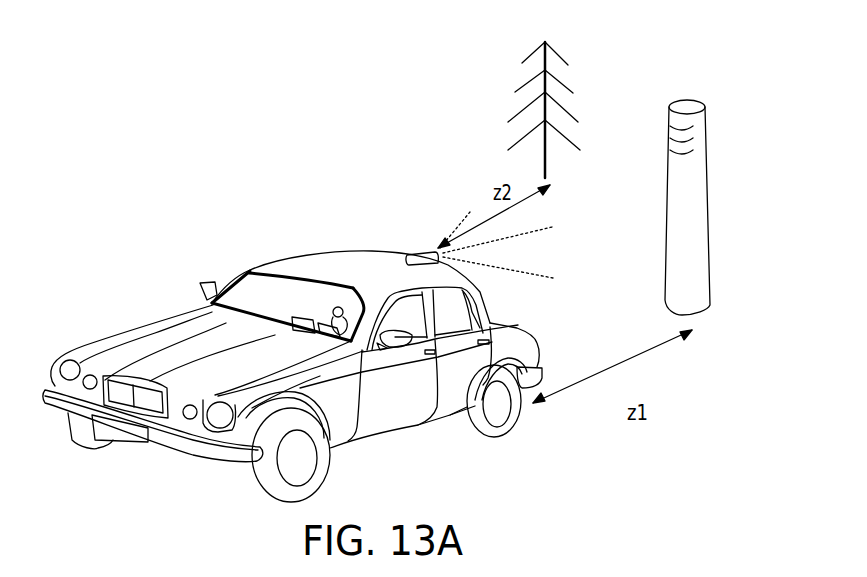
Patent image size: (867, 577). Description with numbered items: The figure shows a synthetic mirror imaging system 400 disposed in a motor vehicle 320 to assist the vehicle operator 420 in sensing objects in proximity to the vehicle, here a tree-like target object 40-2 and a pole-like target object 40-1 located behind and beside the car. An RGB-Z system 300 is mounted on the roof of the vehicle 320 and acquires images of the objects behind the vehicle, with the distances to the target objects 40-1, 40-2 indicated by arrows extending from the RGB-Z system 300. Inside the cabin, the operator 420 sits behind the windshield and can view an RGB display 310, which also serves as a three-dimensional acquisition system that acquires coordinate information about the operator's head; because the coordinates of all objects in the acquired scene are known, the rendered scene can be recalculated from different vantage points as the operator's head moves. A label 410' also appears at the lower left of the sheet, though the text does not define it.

The motor vehicle 320 is at (276, 250).
The RGB-Z system 300 is at (430, 247).
The three-dimensional acquisition system 310 is at (318, 322).
The synthetic mirror imaging system 400 is at (305, 329).
The vehicle operator 420 is at (344, 302).
The target object 40-2 is at (512, 80).
The target object 40-1 is at (662, 172).
The reference element 410' is at (121, 553).